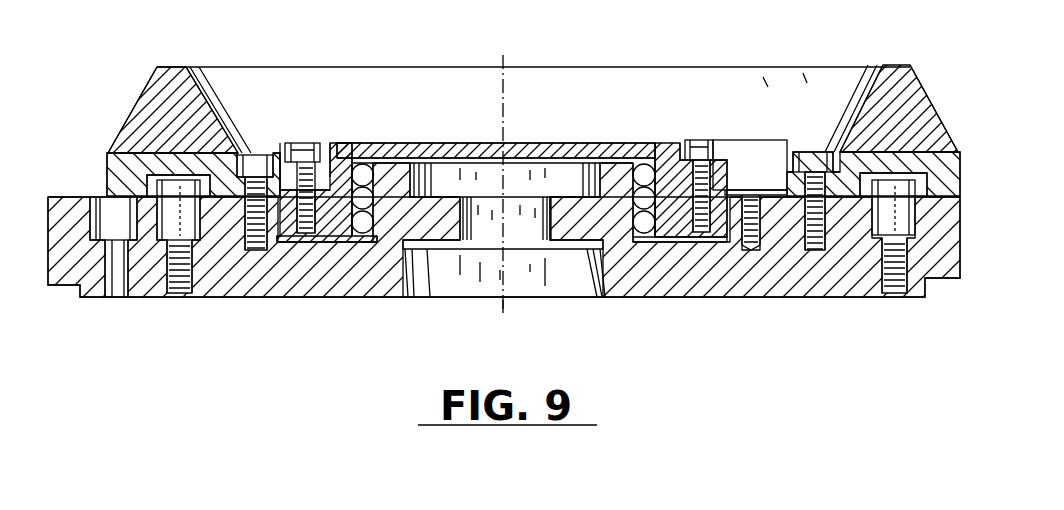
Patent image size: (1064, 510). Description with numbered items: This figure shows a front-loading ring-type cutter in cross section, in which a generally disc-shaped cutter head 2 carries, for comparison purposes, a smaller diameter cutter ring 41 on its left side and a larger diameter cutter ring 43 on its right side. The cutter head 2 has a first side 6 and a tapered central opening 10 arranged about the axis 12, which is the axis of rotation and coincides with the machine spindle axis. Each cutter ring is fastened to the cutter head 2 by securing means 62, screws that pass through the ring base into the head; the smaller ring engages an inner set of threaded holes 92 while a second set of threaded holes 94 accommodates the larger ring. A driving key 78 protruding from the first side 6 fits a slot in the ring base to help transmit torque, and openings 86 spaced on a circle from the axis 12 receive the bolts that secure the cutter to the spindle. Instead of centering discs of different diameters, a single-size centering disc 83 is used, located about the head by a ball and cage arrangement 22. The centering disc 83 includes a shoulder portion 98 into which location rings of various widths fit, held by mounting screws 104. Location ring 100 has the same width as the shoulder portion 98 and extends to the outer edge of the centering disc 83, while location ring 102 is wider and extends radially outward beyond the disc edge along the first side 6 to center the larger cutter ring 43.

The cutter head 2 is at (310, 287).
The first side 6 is at (960, 200).
The central opening 10 is at (433, 287).
The axis 12 is at (503, 305).
The ball and cage arrangement 22 is at (373, 163).
The cutter ring 41 is at (110, 124).
The cutter ring 43 is at (958, 126).
The securing means 62 is at (250, 153).
The driving key 78 is at (176, 290).
The centering disc 83 is at (530, 147).
The openings 86 is at (114, 297).
The threaded holes 92 is at (749, 252).
The threaded holes 94 is at (822, 252).
The shoulder portion 98 is at (670, 147).
The location ring 100 is at (332, 143).
The location ring 102 is at (762, 132).
The mounting screws 104 is at (303, 143).